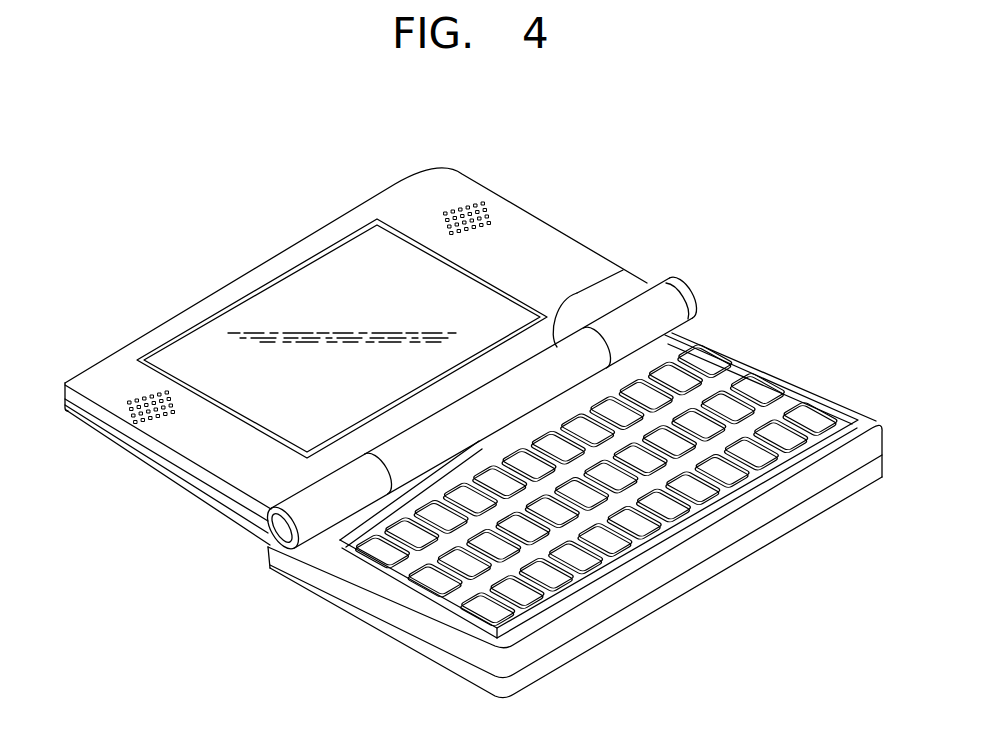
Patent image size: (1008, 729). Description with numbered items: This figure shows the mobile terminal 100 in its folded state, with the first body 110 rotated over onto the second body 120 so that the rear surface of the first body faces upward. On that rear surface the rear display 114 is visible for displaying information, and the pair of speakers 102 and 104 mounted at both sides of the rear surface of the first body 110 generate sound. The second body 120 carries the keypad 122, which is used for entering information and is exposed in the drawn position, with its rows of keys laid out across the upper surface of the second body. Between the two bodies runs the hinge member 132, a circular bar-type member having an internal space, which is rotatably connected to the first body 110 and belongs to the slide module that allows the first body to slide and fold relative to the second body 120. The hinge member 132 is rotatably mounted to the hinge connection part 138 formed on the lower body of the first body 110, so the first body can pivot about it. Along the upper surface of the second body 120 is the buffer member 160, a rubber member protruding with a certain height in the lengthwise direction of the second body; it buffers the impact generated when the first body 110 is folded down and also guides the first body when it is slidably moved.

The mobile terminal 100 is at (735, 178).
The speaker 102 is at (132, 420).
The speaker 104 is at (480, 211).
The first body 110 is at (532, 232).
The rear display 114 is at (298, 288).
The second body 120 is at (645, 565).
The keypad 122 is at (763, 390).
The hinge member 132 is at (587, 345).
The hinge connection part 138 is at (672, 293).
The buffer member 160 is at (697, 527).